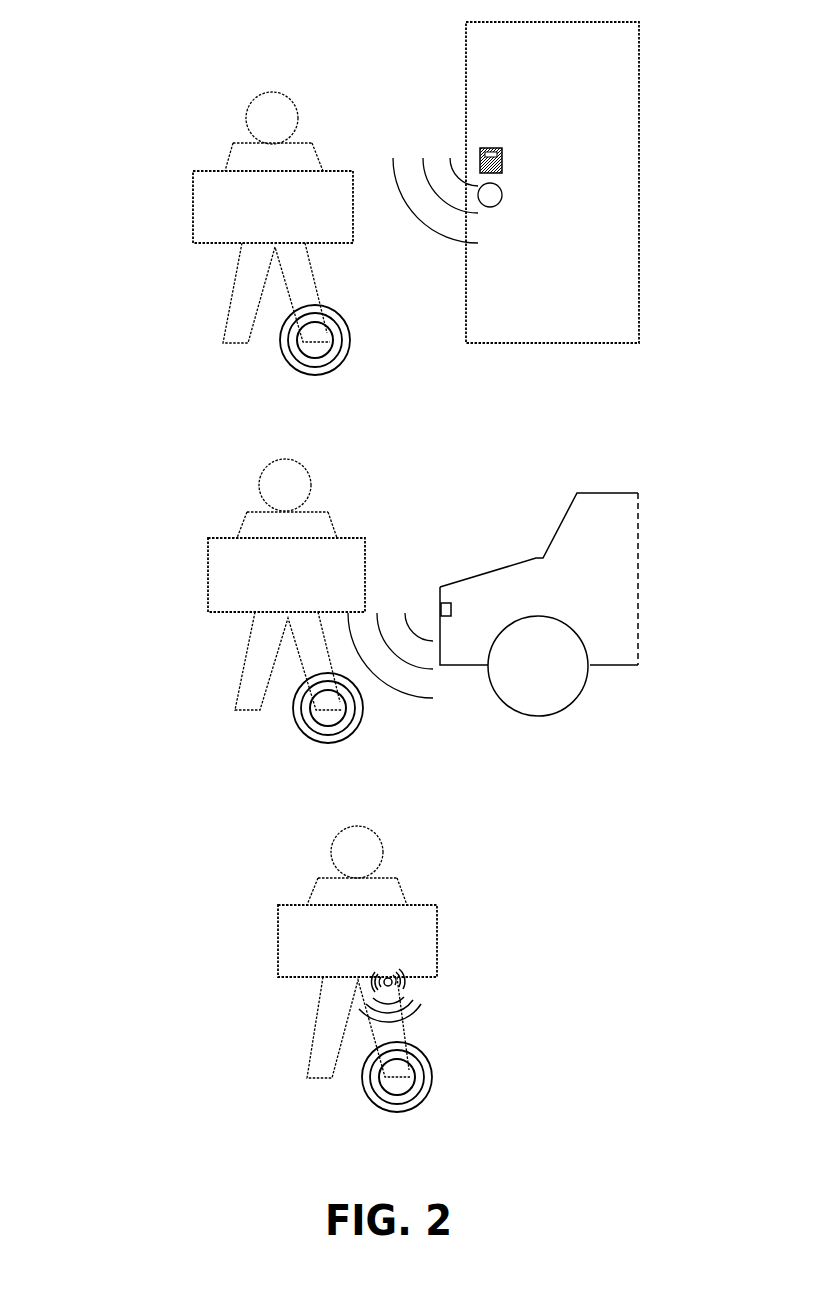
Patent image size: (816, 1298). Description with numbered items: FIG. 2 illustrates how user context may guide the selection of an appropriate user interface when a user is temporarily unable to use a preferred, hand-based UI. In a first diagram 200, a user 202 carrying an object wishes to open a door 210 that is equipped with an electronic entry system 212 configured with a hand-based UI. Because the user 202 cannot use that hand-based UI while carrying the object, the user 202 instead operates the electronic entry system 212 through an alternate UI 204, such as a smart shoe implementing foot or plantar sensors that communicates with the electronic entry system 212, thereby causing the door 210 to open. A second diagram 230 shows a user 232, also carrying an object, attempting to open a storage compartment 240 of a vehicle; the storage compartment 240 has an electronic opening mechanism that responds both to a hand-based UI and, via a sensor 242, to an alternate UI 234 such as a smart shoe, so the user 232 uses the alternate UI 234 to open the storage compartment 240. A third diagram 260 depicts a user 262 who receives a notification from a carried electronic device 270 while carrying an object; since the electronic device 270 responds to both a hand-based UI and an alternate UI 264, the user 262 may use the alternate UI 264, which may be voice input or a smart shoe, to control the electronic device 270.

The first diagram 200 is at (132, 105).
The user 202 is at (290, 396).
The alternate UI 204 is at (318, 338).
The door 210 is at (653, 60).
The electronic entry system 212 is at (516, 173).
The second diagram 230 is at (138, 505).
The user 232 is at (306, 762).
The alternate UI 234 is at (330, 709).
The storage compartment 240 is at (506, 548).
The sensor 242 is at (453, 607).
The third diagram 260 is at (140, 877).
The user 262 is at (381, 1134).
The alternate UI 264 is at (408, 1073).
The electronic device 270 is at (413, 985).